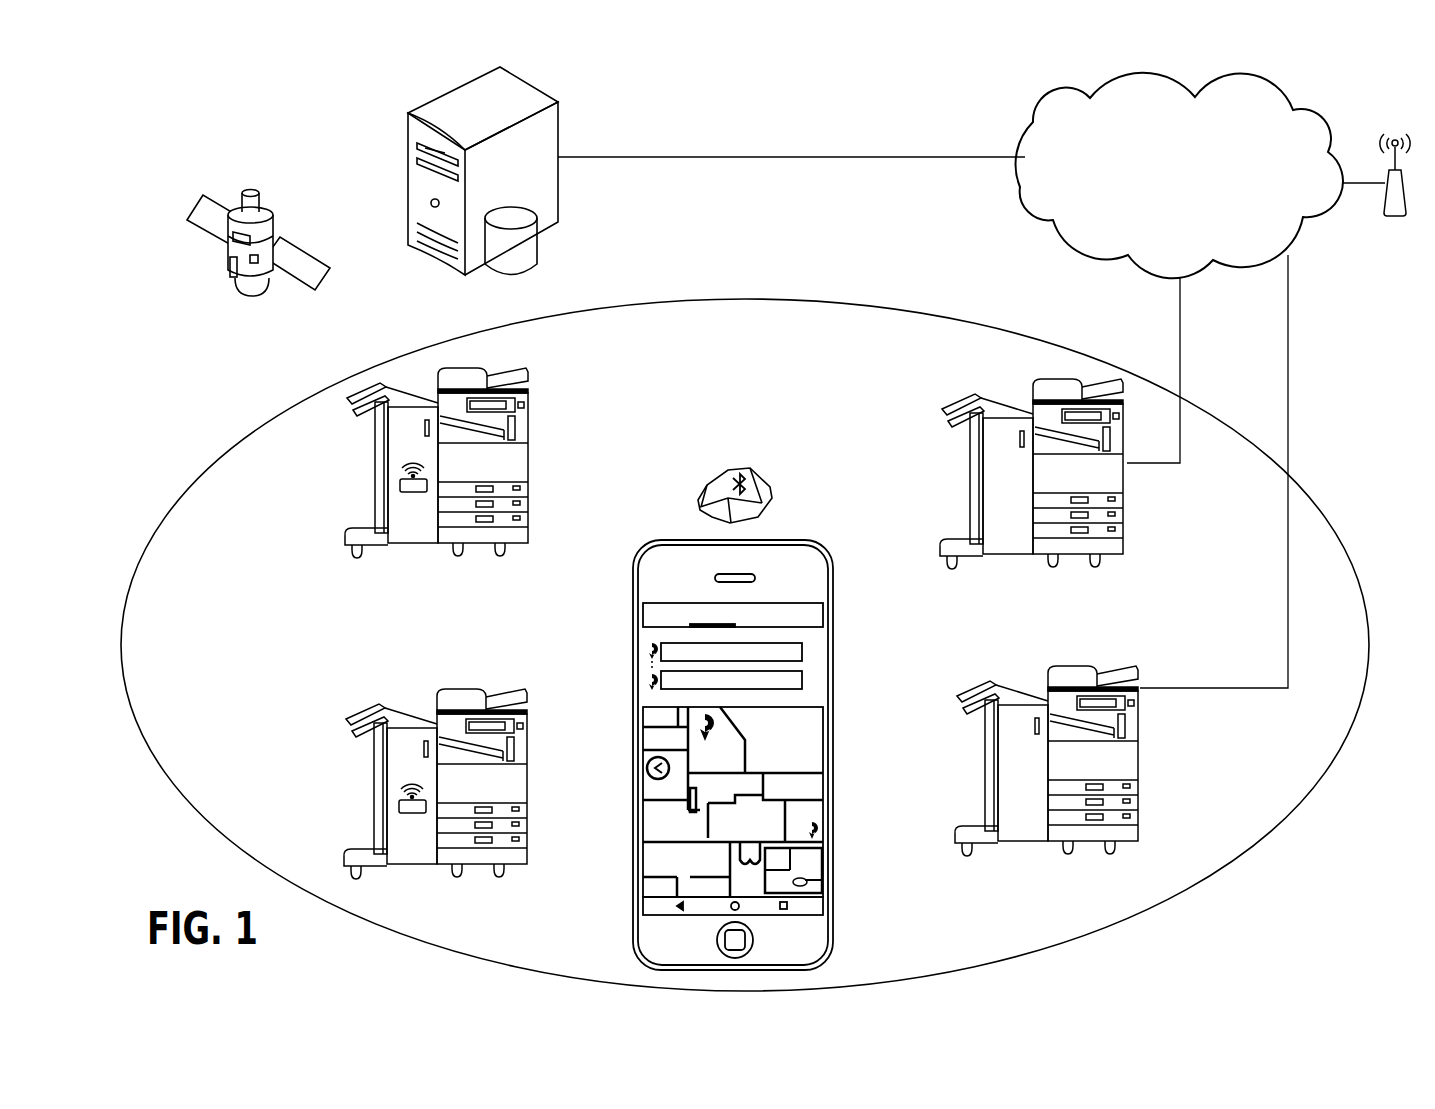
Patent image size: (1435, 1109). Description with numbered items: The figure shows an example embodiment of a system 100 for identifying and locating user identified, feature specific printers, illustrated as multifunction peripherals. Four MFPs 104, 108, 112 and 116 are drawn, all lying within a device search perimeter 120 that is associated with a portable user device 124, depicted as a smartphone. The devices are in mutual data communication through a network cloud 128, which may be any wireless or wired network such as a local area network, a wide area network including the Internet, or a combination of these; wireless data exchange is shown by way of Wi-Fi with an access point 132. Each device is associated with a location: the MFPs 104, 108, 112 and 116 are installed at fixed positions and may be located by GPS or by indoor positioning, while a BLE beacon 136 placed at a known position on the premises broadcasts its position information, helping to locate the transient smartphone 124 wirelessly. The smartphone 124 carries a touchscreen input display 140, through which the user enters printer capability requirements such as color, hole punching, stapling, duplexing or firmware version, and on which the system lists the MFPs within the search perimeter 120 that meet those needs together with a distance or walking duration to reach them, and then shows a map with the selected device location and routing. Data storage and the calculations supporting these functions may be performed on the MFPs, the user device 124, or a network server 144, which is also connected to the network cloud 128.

The system 100 is at (206, 118).
The MFP 104 is at (1043, 380).
The MFP 108 is at (1052, 668).
The MFP 112 is at (530, 400).
The MFP 116 is at (490, 689).
The device search perimeter 120 is at (1237, 853).
The portable user device 124 is at (833, 918).
The network cloud 128 is at (1372, 104).
The access point 132 is at (1397, 216).
The BLE beacon 136 is at (772, 492).
The touchscreen input display 140 is at (818, 826).
The server 144 is at (558, 188).